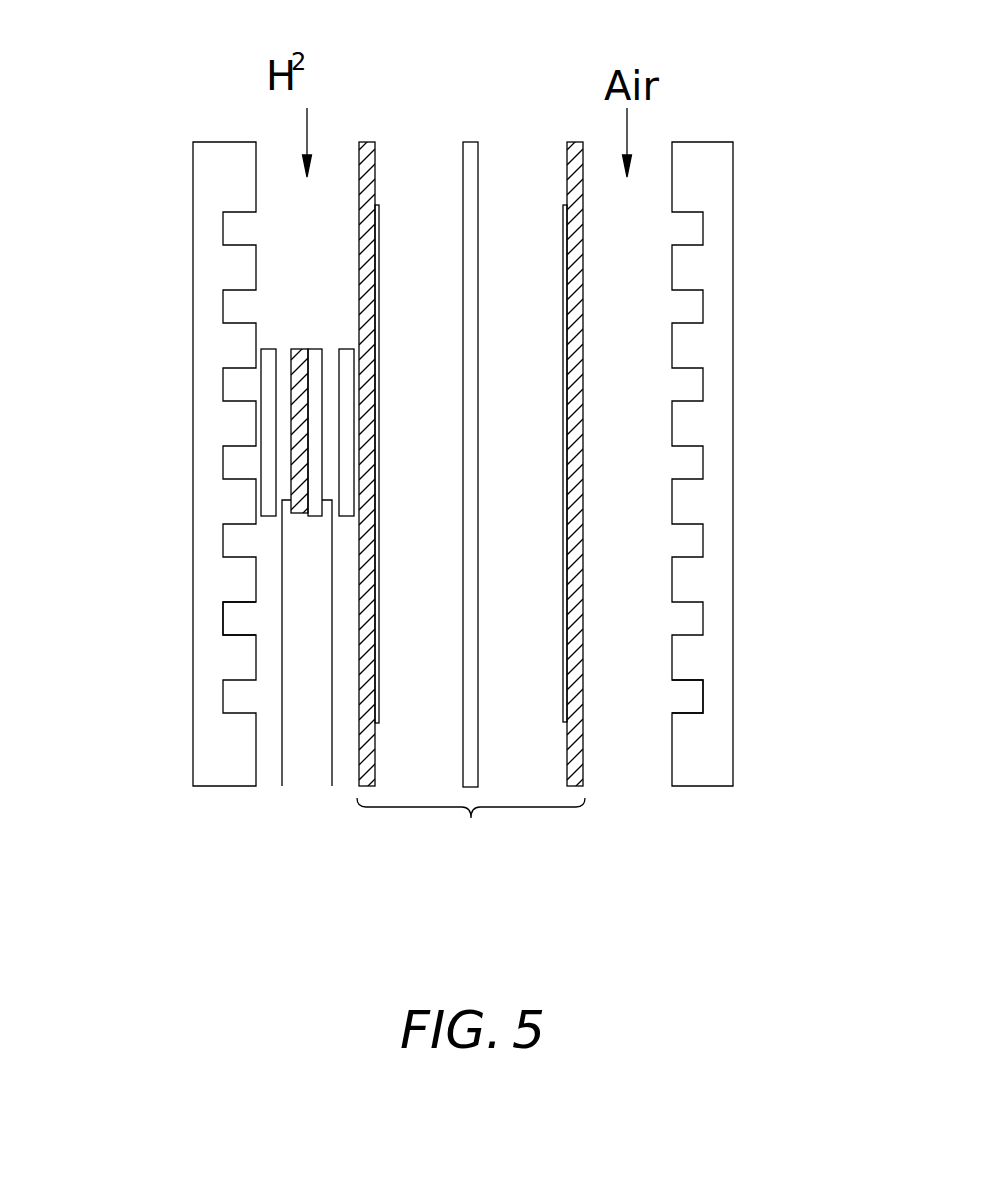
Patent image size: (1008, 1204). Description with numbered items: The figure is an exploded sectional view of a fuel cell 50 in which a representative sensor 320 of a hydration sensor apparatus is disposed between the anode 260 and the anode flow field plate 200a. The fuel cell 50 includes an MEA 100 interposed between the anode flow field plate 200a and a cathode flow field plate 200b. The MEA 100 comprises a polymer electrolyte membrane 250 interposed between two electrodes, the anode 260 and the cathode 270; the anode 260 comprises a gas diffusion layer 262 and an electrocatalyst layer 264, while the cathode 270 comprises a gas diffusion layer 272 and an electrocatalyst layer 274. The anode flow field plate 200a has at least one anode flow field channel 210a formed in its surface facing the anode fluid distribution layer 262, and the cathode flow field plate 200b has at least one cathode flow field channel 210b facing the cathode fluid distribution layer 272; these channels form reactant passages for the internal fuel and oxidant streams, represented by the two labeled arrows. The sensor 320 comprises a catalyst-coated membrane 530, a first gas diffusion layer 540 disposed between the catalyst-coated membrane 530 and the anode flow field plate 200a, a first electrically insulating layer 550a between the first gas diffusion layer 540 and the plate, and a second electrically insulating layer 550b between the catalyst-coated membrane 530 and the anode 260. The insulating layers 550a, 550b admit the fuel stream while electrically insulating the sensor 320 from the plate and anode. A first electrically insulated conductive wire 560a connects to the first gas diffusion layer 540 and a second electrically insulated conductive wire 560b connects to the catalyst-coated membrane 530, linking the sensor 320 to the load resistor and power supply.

The fuel cell 50 is at (692, 76).
The MEA 100 is at (471, 812).
The anode flow field plate 200a is at (225, 767).
The cathode flow field plate 200b is at (707, 772).
The anode flow field channel 210a is at (230, 618).
The cathode flow field channel 210b is at (693, 697).
The polymer electrolyte membrane 250 is at (463, 787).
The anode 260 is at (344, 797).
The gas diffusion layer 262 is at (345, 262).
The electrocatalyst layer 264 is at (379, 243).
The cathode 270 is at (600, 793).
The gas diffusion layer 272 is at (583, 241).
The electrocatalyst layer 274 is at (563, 243).
The sensor 320 is at (276, 327).
The catalyst-coated membrane 530 is at (313, 349).
The first gas diffusion layer 540 is at (305, 349).
The first electrically insulating layer 550a is at (262, 385).
The second electrically insulating layer 550b is at (355, 403).
The first electrically insulated conductive wire 560a is at (282, 632).
The second electrically insulated conductive wire 560b is at (332, 663).